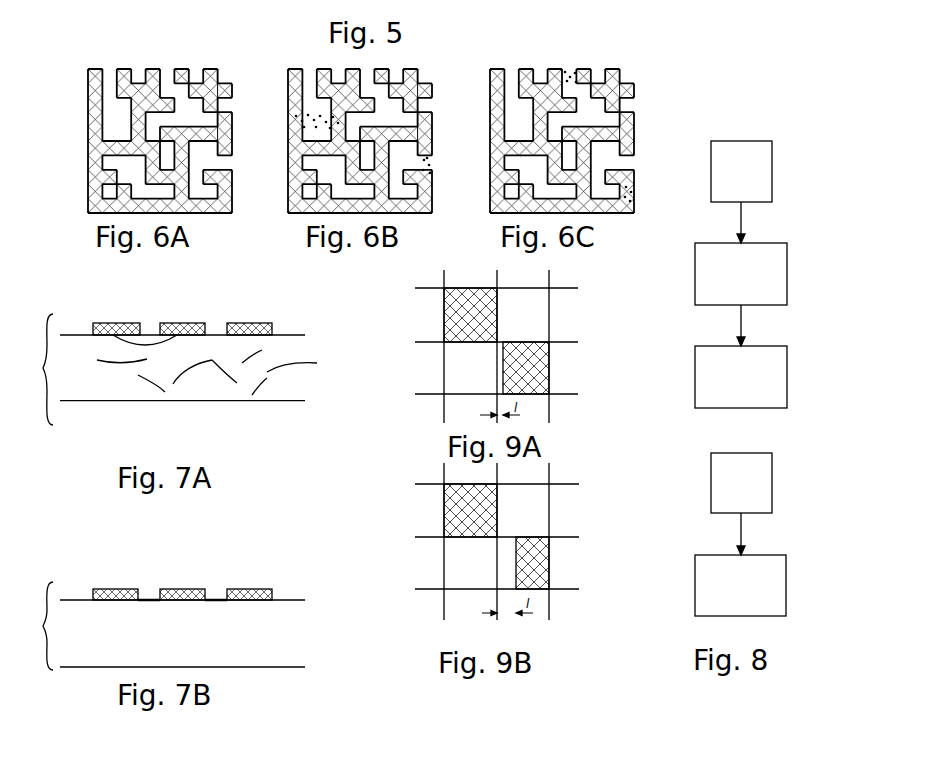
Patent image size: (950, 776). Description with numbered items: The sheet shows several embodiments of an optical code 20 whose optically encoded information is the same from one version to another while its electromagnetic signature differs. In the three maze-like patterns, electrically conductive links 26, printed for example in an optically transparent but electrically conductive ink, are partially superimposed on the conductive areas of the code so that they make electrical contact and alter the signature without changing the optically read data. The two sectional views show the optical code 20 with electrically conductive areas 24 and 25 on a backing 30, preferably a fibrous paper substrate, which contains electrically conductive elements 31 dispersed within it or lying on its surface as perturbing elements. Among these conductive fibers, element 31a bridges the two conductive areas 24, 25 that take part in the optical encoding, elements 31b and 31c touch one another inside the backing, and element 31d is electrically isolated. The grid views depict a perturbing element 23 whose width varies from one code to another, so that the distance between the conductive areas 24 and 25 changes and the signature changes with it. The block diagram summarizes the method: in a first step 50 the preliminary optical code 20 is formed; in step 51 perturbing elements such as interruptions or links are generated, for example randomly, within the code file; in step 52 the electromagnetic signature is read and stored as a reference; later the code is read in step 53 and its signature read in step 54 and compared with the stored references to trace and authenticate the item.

In FIG. 6A, the optical code 20 is at (88, 68).
In FIG. 6B, the optical code 20 is at (288, 68).
In FIG. 7A, the optical code 20 is at (160, 369).
In FIG. 7B, the optical code 20 is at (160, 626).
In FIG. 9A, the substrate grid 23 is at (503, 367).
In FIG. 9B, the substrate grid 23 is at (505, 562).
In FIG. 7A, the electrically conductive area 24 is at (112, 324).
In FIG. 7B, the electrically conductive area 24 is at (117, 594).
In FIG. 9A, the electrically conductive area 24 is at (450, 313).
In FIG. 9B, the electrically conductive area 24 is at (447, 507).
In FIG. 7A, the electrically conductive area 25 is at (198, 324).
In FIG. 7B, the electrically conductive area 25 is at (193, 594).
In FIG. 9A, the electrically conductive area 25 is at (550, 365).
In FIG. 9B, the electrically conductive area 25 is at (550, 563).
In FIG. 6B, the electrically conductive link 26 is at (304, 130).
In FIG. 6C, the electrically conductive link 26 is at (572, 73).
In FIG. 7A, the backing 30 is at (128, 392).
In FIG. 7B, the backing 30 is at (265, 652).
In FIG. 7A, the electrically conductive element 31 is at (140, 360).
In FIG. 7B, the electrically conductive element 31 is at (148, 598).
In FIG. 7A, the electrically conductive element 31a is at (145, 346).
In FIG. 7A, the electrically conductive element 31b is at (191, 374).
In FIG. 7A, the electrically conductive element 31c is at (223, 377).
In FIG. 7A, the electrically conductive element 31d is at (287, 369).
In FIG. 8, the first step 50 is at (745, 141).
In FIG. 8, the step 51 is at (695, 277).
In FIG. 8, the step 52 is at (695, 377).
In FIG. 8, the step 53 is at (711, 483).
In FIG. 8, the step 54 is at (695, 583).